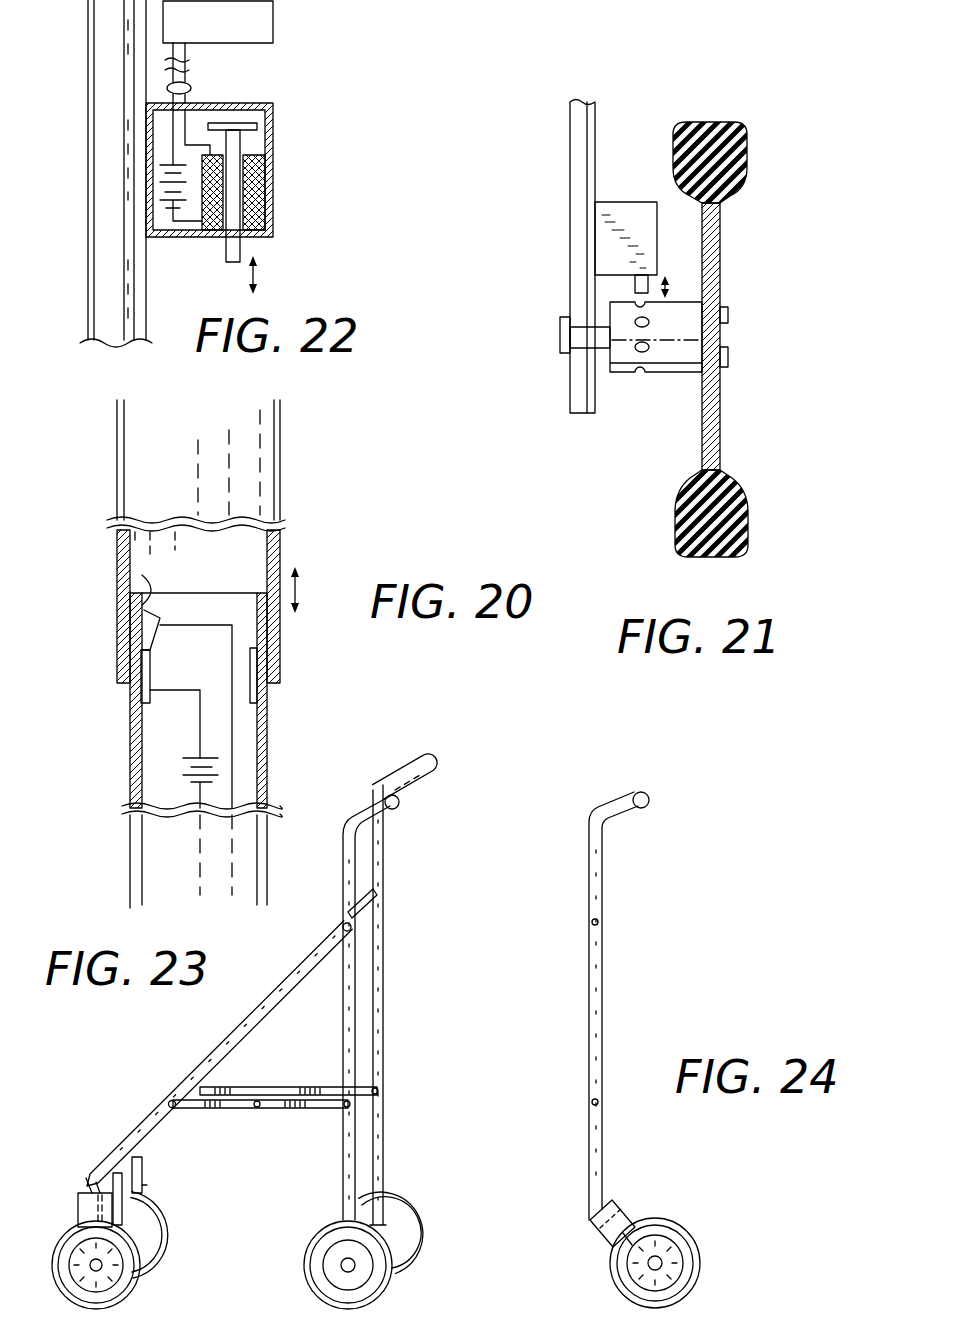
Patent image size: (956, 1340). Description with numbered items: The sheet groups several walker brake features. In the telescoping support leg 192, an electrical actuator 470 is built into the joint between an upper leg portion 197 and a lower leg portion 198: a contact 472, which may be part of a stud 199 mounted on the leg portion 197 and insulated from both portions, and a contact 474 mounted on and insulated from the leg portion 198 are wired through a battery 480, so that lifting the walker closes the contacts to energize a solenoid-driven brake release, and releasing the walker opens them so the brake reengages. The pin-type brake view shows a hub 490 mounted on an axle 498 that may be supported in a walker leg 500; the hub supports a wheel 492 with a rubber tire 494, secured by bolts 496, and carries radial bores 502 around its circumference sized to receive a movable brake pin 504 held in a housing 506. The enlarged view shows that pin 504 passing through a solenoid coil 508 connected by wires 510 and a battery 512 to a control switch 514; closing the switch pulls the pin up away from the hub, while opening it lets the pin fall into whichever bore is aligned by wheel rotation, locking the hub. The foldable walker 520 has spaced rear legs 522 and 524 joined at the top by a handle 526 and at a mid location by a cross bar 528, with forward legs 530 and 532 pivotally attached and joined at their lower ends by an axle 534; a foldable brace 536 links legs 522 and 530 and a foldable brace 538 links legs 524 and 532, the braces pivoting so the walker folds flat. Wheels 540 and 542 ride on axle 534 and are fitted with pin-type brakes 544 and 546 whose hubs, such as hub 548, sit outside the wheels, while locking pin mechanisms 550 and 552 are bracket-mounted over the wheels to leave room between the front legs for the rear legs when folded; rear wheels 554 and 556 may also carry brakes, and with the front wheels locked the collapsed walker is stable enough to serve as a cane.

In FIG. 22, the control switch 514 is at (275, 23).
In FIG. 22, the wires 510 is at (190, 90).
In FIG. 22, the housing 506 is at (275, 128).
In FIG. 21, the housing 506 is at (627, 202).
In FIG. 22, the battery 512 is at (160, 165).
In FIG. 22, the brake pin 504 is at (233, 205).
In FIG. 21, the brake pin 504 is at (635, 285).
In FIG. 22, the solenoid coil 508 is at (265, 215).
In FIG. 21, the walker leg 500 is at (573, 238).
In FIG. 21, the axle 498 is at (600, 335).
In FIG. 21, the radial bores 502 is at (640, 352).
In FIG. 21, the hub 490 is at (670, 372).
In FIG. 21, the wheel 492 is at (718, 247).
In FIG. 21, the bolts 496 is at (728, 312).
In FIG. 21, the rubber tire 494 is at (707, 550).
In FIG. 20, the leg portion 197 is at (255, 470).
In FIG. 20, the telescoping support leg 192 is at (318, 530).
In FIG. 20, the leg portion 198 is at (140, 847).
In FIG. 20, the electrical actuator 470 is at (100, 645).
In FIG. 20, the contact 474 is at (142, 580).
In FIG. 20, the contact 472 is at (142, 690).
In FIG. 20, the stud 199 is at (267, 690).
In FIG. 20, the battery 480 is at (185, 750).
In FIG. 23, the handle 526 is at (410, 788).
In FIG. 23, the cross bar 528 is at (362, 925).
In FIG. 23, the rear leg 524 is at (380, 977).
In FIG. 23, the rear leg 522 is at (352, 1027).
In FIG. 23, the forward leg 532 is at (205, 1057).
In FIG. 23, the foldable brace 538 is at (248, 1087).
In FIG. 23, the foldable brace 536 is at (212, 1108).
In FIG. 23, the forward leg 530 is at (152, 1113).
In FIG. 23, the locking pin mechanism 550 is at (103, 1190).
In FIG. 23, the locking pin mechanism 552 is at (143, 1170).
In FIG. 23, the pin-type brake 546 is at (147, 1185).
In FIG. 23, the pin-type brake 544 is at (80, 1192).
In FIG. 23, the wheel 540 is at (62, 1233).
In FIG. 23, the wheel 542 is at (158, 1238).
In FIG. 23, the hub 548 is at (107, 1290).
In FIG. 23, the axle 534 is at (100, 1265).
In FIG. 23, the wheel 556 is at (423, 1225).
In FIG. 23, the wheel 554 is at (387, 1292).
In FIG. 24, the foldable walker 520 is at (650, 962).